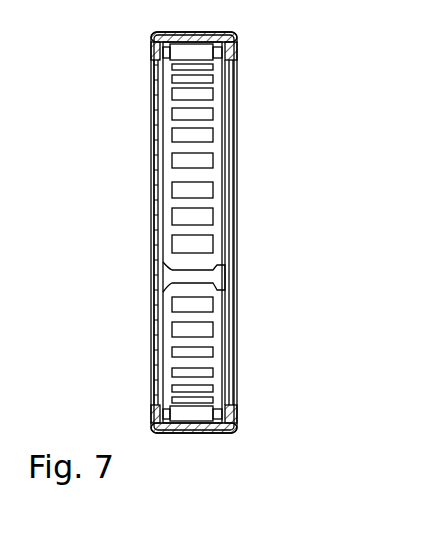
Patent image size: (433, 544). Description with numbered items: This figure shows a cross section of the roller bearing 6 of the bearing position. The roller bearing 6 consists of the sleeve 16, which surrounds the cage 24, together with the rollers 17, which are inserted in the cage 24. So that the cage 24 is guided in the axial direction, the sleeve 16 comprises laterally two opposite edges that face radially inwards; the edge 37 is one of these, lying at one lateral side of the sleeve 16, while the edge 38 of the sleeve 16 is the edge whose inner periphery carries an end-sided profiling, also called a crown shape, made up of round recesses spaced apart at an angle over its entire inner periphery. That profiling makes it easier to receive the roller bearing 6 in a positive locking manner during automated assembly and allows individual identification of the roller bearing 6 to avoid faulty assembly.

The roller bearing 6 is at (260, 222).
The sleeve 16 is at (213, 432).
The rollers 17 is at (183, 414).
The cage 24 is at (218, 340).
The edge 37 is at (234, 182).
The edge 38 is at (151, 187).